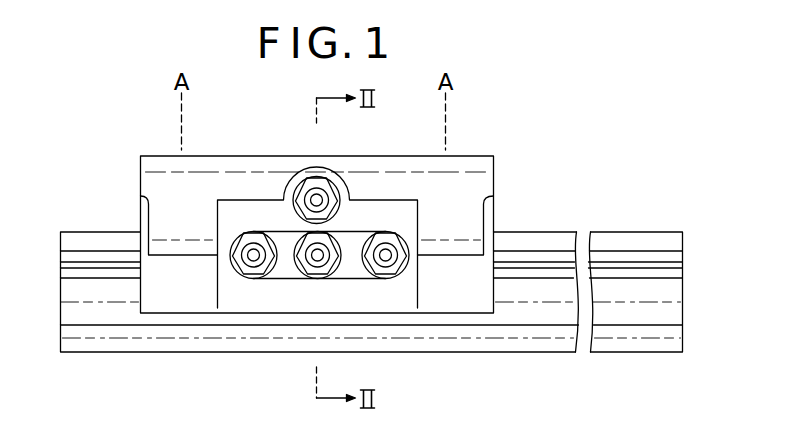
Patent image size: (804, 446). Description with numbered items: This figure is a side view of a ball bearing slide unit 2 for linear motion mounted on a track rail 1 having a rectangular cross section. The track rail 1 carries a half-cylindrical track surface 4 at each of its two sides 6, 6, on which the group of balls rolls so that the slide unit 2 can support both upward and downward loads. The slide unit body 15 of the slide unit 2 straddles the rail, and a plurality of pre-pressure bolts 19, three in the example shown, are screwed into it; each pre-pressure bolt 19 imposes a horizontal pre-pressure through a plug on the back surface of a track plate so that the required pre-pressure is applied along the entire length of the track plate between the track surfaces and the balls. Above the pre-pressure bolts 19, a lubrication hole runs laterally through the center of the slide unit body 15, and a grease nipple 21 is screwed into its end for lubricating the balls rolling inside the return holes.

The track rail 1 is at (499, 358).
The ball bearing slide unit 2 is at (464, 149).
The track surface 4 is at (672, 256).
The side of the track rail 6 is at (673, 270).
The slide unit body 15 is at (413, 165).
The pre-pressure bolt 19 is at (253, 258).
The grease nipple 21 is at (312, 196).